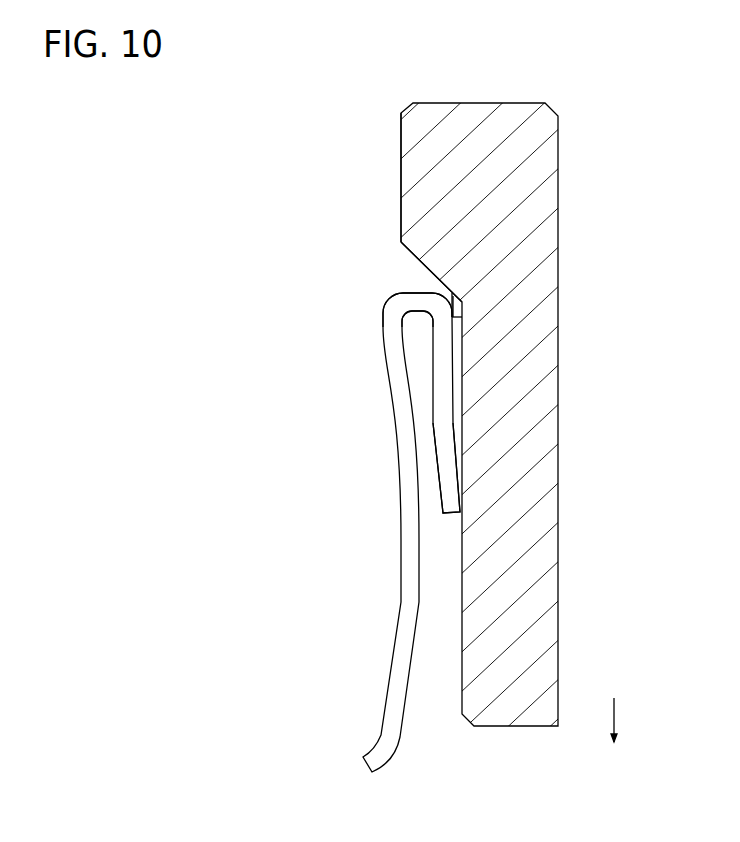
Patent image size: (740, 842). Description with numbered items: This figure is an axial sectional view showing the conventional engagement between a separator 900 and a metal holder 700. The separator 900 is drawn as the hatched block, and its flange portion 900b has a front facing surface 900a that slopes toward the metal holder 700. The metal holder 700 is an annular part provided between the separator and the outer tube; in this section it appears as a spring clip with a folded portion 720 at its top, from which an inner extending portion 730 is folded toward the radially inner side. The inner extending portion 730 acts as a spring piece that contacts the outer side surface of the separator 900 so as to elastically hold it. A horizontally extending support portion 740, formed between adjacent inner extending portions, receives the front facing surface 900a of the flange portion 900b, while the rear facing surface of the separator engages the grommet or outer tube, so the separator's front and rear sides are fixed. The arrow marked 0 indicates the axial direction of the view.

The separator 900 is at (585, 155).
The flange portion 900b is at (422, 173).
The front facing surface 900a is at (404, 243).
The metal holder 700 is at (360, 500).
The folded portion 720 is at (398, 305).
The support portion 740 is at (443, 293).
The inner extending portion 730 is at (449, 508).
The direction arrow 0 is at (625, 720).